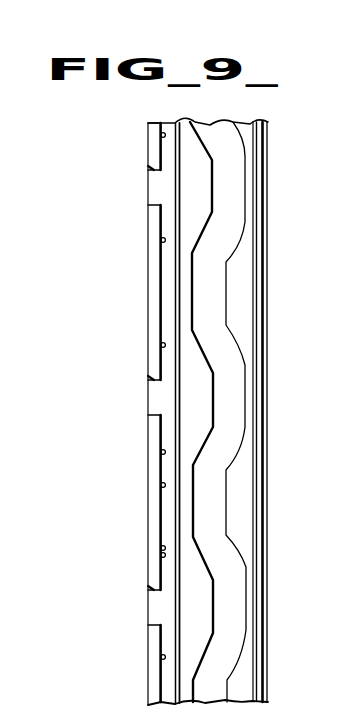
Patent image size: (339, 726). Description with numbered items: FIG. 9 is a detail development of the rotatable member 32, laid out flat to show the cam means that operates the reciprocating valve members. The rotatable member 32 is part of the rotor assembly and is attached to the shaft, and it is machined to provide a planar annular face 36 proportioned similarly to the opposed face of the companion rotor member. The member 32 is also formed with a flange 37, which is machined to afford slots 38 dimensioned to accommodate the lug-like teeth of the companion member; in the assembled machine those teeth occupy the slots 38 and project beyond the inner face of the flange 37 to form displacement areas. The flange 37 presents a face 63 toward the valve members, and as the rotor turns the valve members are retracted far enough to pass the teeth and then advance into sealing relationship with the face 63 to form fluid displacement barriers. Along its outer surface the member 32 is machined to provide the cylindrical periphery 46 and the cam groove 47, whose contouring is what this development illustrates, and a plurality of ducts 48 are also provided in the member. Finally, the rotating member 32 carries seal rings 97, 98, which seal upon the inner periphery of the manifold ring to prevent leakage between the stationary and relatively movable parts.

The rotatable member 32 is at (264, 298).
The planar annular face 36 is at (148, 337).
The flange 37 is at (152, 509).
The slots 38 is at (150, 172).
The cylindrical periphery 46 is at (245, 511).
The cam groove 47 is at (237, 401).
The ducts 48 is at (160, 241).
The face of flange 63 is at (160, 485).
The seal ring 97 is at (178, 297).
The seal ring 98 is at (258, 258).